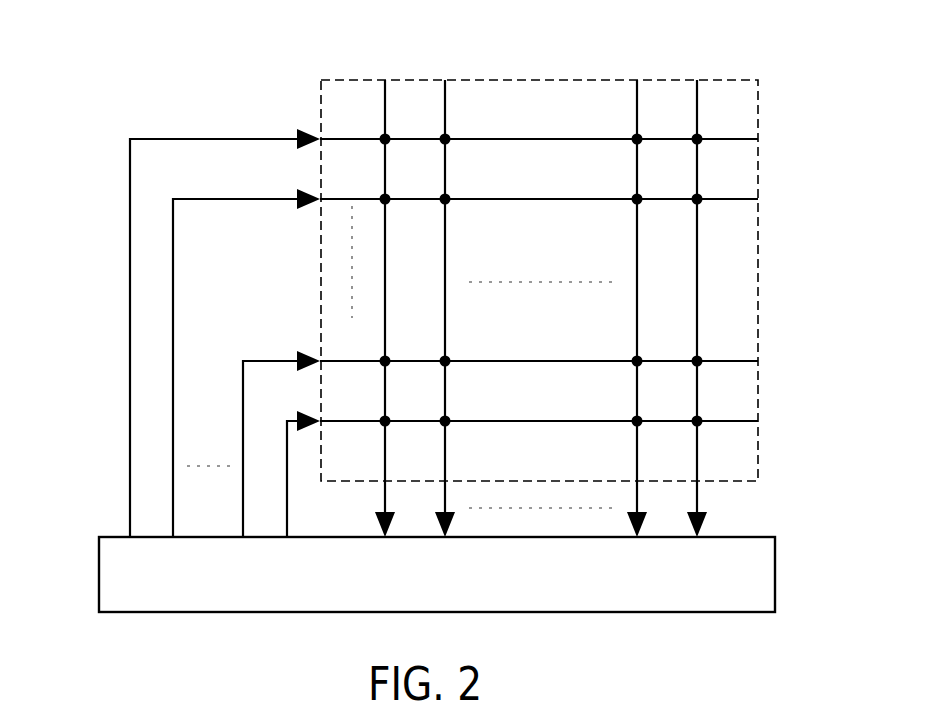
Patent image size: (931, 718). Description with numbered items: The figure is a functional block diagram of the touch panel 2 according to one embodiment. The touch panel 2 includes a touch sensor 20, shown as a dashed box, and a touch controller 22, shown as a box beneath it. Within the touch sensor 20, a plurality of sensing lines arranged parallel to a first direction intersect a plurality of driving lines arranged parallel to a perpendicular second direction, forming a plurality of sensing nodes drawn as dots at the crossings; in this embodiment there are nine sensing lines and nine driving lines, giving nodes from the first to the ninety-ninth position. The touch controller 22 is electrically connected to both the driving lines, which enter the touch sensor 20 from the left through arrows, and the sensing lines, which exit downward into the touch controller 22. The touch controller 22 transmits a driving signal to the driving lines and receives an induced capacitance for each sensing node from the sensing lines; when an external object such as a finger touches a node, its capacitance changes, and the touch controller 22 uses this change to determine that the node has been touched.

The touch panel 2 is at (79, 40).
The touch sensor 20 is at (532, 79).
The touch controller 22 is at (775, 572).